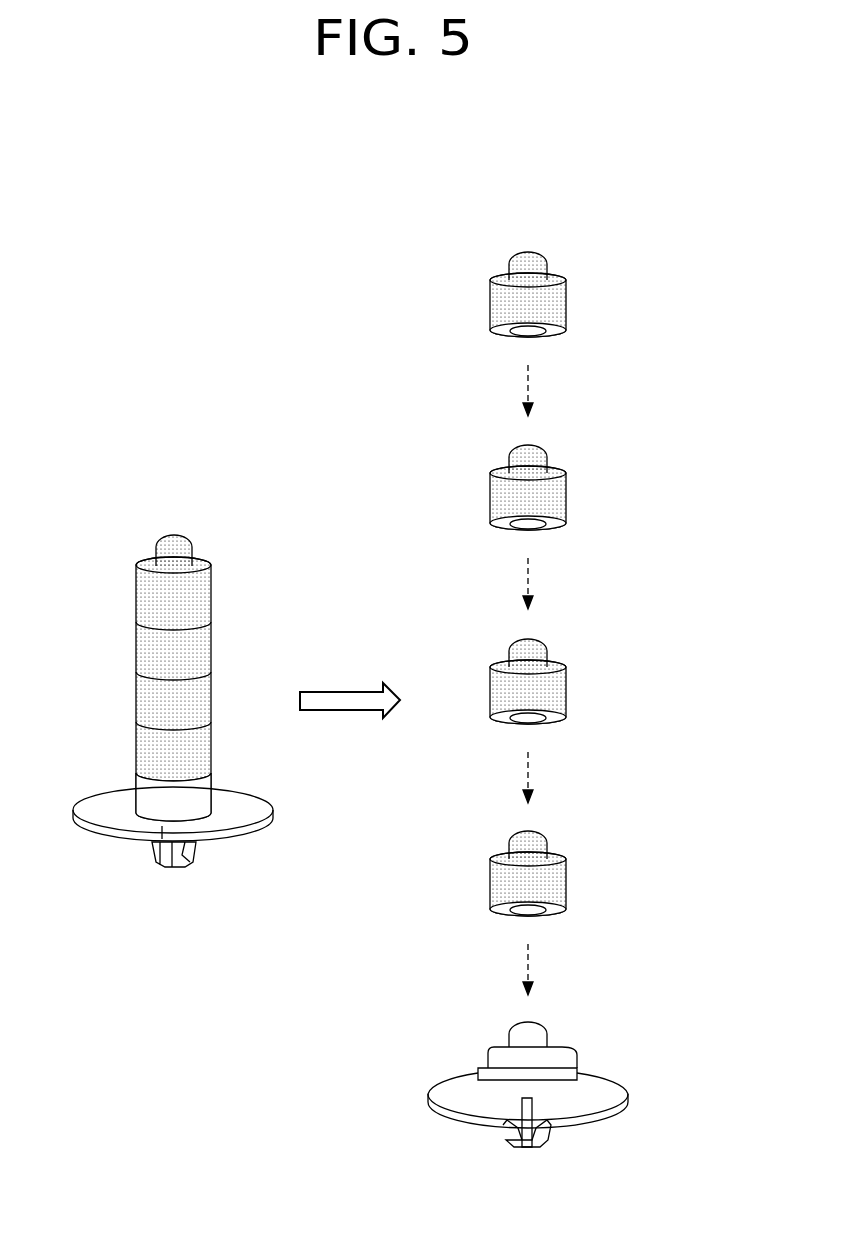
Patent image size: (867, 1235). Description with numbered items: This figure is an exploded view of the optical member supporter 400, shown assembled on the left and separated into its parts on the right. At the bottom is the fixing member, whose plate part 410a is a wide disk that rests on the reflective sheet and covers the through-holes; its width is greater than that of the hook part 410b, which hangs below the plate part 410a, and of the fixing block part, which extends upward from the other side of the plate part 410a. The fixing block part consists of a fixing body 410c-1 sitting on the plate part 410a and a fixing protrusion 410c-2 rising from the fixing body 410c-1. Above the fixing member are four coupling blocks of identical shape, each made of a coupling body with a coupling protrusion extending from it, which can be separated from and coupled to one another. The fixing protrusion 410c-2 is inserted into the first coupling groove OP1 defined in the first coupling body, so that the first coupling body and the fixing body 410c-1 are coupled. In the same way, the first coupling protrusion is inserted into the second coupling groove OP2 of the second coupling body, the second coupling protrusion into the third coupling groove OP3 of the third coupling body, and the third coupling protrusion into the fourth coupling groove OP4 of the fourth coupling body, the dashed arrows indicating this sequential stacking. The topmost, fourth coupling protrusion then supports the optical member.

The optical member supporter 400 is at (138, 508).
The fourth coupling groove OP4 is at (530, 336).
The third coupling groove OP3 is at (530, 529).
The second coupling groove OP2 is at (530, 723).
The first coupling groove OP1 is at (530, 915).
The fixing protrusion 410c-2 is at (533, 1032).
The fixing body 410c-1 is at (557, 1057).
The plate part 410a is at (620, 1087).
The hook part 410b is at (535, 1118).